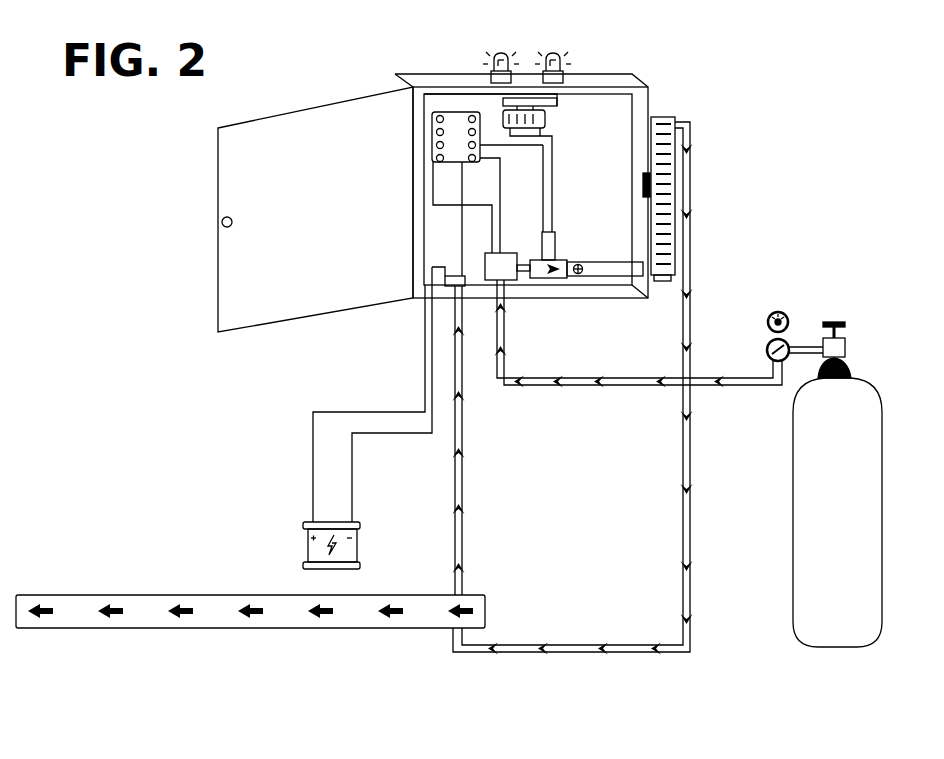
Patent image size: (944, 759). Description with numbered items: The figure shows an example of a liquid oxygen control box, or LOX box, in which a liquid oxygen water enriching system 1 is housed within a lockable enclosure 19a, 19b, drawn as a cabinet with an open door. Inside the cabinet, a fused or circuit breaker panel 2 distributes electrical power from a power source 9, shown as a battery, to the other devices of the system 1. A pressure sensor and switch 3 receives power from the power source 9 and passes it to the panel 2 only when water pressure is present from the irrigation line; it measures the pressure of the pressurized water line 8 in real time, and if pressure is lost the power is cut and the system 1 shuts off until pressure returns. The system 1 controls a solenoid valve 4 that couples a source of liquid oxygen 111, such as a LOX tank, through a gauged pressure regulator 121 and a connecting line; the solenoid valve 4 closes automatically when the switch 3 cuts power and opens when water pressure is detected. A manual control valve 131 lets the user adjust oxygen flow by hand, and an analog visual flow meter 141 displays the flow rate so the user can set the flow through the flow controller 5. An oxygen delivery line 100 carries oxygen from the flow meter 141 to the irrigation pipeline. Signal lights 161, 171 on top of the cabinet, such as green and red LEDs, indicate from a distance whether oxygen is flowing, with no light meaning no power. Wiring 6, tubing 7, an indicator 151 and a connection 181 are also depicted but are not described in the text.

The liquid oxygen water enriching system 1 is at (418, 67).
The fused or circuit breaker panel 2 is at (448, 125).
The pressure sensor and switch 3 is at (448, 274).
The solenoid valve 4 is at (507, 266).
The flow controller 5 is at (548, 269).
The power wire 6 is at (372, 394).
The sampling pipe 7 is at (462, 440).
The pressurized water line 8 is at (250, 604).
The power source 9 is at (323, 545).
The lockable enclosure 19a is at (208, 209).
The lockable enclosure 19b is at (651, 184).
The oxygen delivery line 100 is at (692, 551).
The source of liquid oxygen 111 is at (840, 471).
The gauged pressure regulator 121 is at (771, 304).
The manual control valve 131 is at (579, 262).
The analog visual flow meter 141 is at (674, 151).
The indicator lamp 151 is at (545, 120).
The signal light 161 is at (562, 52).
The signal light 171 is at (507, 52).
The connecting tube 181 is at (552, 206).